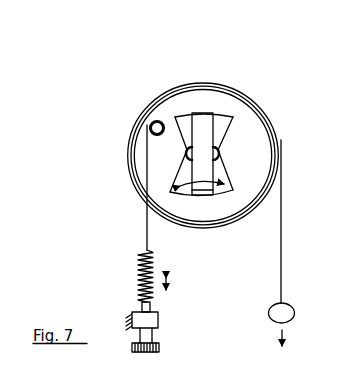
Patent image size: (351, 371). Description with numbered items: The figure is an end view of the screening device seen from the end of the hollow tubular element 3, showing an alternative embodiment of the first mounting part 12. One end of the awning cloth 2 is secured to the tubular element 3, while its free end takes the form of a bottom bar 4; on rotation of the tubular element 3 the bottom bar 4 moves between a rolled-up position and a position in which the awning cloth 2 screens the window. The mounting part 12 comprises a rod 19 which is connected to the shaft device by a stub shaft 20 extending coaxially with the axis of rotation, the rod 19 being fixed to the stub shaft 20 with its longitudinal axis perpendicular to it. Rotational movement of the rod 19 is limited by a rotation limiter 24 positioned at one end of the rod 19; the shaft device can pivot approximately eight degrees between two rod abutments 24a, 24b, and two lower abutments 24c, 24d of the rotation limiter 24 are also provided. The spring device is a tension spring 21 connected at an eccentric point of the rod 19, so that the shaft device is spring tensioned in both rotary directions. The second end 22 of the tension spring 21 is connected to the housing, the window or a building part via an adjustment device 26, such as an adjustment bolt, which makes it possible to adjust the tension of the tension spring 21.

The awning cloth 2 is at (281, 225).
The hollow tubular element 3 is at (190, 82).
The bottom bar 4 is at (286, 311).
The first mounting part 12 is at (131, 168).
The rod 19 is at (207, 172).
The stub shaft 20 is at (200, 153).
The tension spring 21 is at (138, 275).
The second end 22 is at (153, 303).
The rotation limiter 24 is at (223, 105).
The rod abutment 24a is at (162, 121).
The rod abutment 24b is at (237, 124).
The lower abutment 24c is at (186, 176).
The lower abutment 24d is at (223, 166).
The adjustment device 26 is at (150, 321).